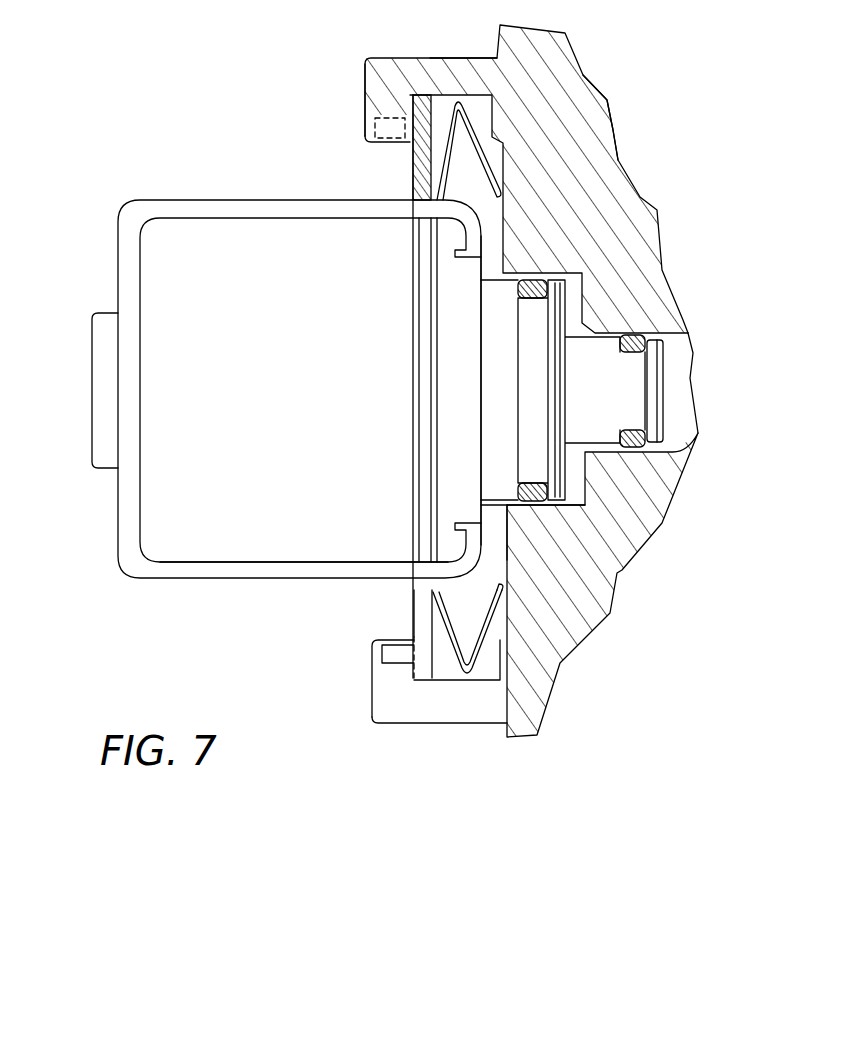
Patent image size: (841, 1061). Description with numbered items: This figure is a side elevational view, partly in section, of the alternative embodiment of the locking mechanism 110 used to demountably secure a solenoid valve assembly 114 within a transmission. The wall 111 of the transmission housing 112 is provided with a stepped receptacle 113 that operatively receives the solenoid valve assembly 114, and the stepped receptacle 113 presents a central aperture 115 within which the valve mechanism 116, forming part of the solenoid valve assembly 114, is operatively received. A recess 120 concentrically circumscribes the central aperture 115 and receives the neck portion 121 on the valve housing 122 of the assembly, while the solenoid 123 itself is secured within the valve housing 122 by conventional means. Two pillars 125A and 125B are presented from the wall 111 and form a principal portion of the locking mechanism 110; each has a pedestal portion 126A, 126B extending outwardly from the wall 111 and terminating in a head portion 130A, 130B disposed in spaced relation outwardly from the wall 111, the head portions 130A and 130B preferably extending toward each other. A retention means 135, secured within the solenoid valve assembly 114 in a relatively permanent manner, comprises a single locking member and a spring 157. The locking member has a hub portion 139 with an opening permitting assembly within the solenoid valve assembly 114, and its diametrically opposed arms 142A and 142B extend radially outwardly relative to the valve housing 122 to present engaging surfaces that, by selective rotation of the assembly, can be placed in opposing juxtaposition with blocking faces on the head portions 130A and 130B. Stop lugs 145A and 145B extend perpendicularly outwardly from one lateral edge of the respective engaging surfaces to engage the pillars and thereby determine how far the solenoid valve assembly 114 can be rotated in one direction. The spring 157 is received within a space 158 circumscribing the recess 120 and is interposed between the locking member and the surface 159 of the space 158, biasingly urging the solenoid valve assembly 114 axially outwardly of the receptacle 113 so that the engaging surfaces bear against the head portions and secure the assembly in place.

The locking mechanism 110 is at (211, 170).
The wall 111 is at (562, 72).
The transmission housing 112 is at (618, 124).
The stepped receptacle 113 is at (692, 363).
The solenoid valve assembly 114 is at (188, 593).
The central aperture 115 is at (673, 450).
The valve mechanism 116 is at (642, 392).
The recess 120 is at (575, 488).
The neck portion 121 is at (552, 303).
The valve housing 122 is at (279, 575).
The solenoid 123 is at (105, 389).
The pillar 125A is at (362, 54).
The pillar 125B is at (368, 724).
The pedestal portion 126A is at (460, 66).
The pedestal portion 126B is at (462, 708).
The head portion 130A is at (388, 82).
The head portion 130B is at (385, 680).
The retention means 135 is at (417, 270).
The hub portion 139 is at (421, 345).
The arm 142A is at (420, 167).
The arm 142B is at (430, 600).
The stop lug 145A is at (378, 130).
The stop lug 145B is at (398, 652).
The spring 157 is at (455, 663).
The space 158 is at (495, 667).
The surface 159 is at (497, 553).